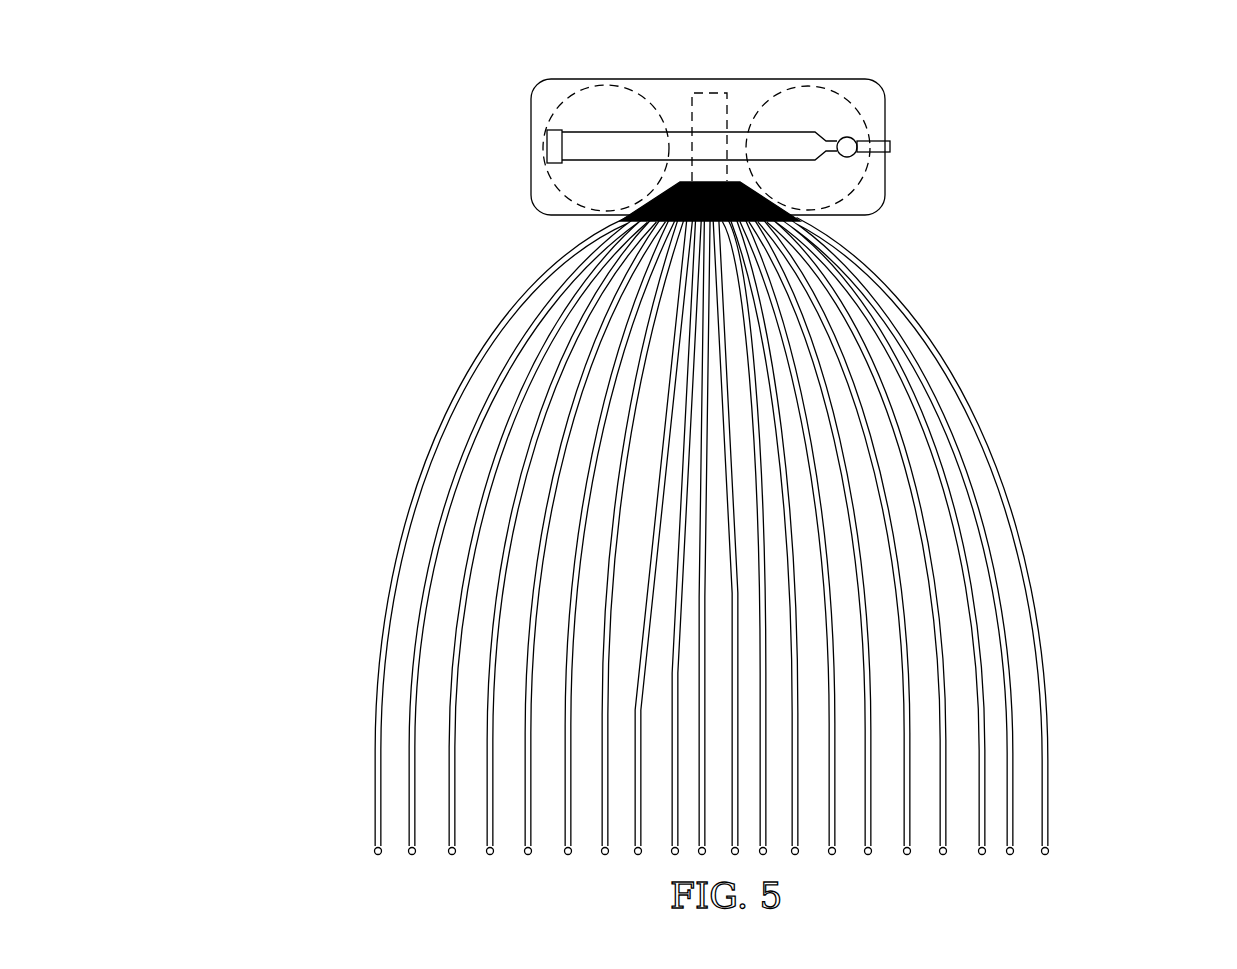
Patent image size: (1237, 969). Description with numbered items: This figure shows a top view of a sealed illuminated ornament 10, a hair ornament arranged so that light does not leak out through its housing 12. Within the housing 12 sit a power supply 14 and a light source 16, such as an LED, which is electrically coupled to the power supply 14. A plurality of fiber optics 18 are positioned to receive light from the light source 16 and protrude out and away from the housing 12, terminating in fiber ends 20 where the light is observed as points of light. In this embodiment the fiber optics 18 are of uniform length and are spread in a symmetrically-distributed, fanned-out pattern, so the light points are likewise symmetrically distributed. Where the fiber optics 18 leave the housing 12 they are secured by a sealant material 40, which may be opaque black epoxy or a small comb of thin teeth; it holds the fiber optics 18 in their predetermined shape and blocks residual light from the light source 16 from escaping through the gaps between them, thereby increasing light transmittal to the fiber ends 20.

The illuminated ornament 10 is at (352, 232).
The housing 12 is at (531, 172).
The power supply 14 is at (880, 118).
The light source 16 is at (712, 93).
The fiber optics 18 is at (963, 400).
The fiber ends 20 is at (1050, 852).
The sealant material 40 is at (682, 182).